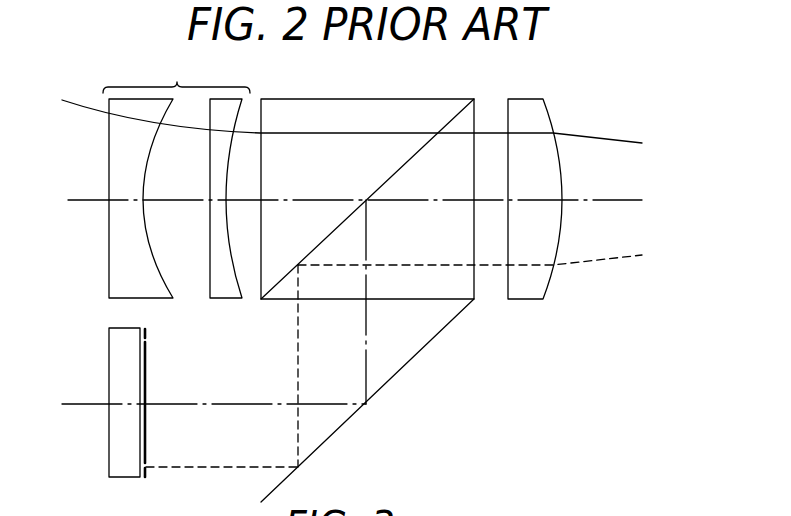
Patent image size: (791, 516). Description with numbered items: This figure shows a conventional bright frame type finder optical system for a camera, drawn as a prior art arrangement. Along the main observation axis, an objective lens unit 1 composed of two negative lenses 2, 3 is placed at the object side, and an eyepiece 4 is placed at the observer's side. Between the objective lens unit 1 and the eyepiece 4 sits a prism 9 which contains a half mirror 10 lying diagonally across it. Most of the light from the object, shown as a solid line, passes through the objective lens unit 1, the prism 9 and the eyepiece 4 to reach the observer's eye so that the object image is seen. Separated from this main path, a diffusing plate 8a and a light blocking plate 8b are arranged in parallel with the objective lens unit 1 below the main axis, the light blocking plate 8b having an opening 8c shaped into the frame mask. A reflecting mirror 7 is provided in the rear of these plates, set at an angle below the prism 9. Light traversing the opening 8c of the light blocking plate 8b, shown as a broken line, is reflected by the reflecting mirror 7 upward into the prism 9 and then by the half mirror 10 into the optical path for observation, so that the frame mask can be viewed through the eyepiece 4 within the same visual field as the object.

The objective lens unit 1 is at (176, 77).
The negative lens 2 is at (107, 290).
The negative lens 3 is at (210, 290).
The eyepiece 4 is at (535, 99).
The reflecting mirror 7 is at (414, 357).
The diffusing plate 8a is at (108, 372).
The light blocking plate 8b is at (148, 376).
The opening 8c is at (148, 342).
The prism 9 is at (420, 98).
The half mirror 10 is at (412, 157).